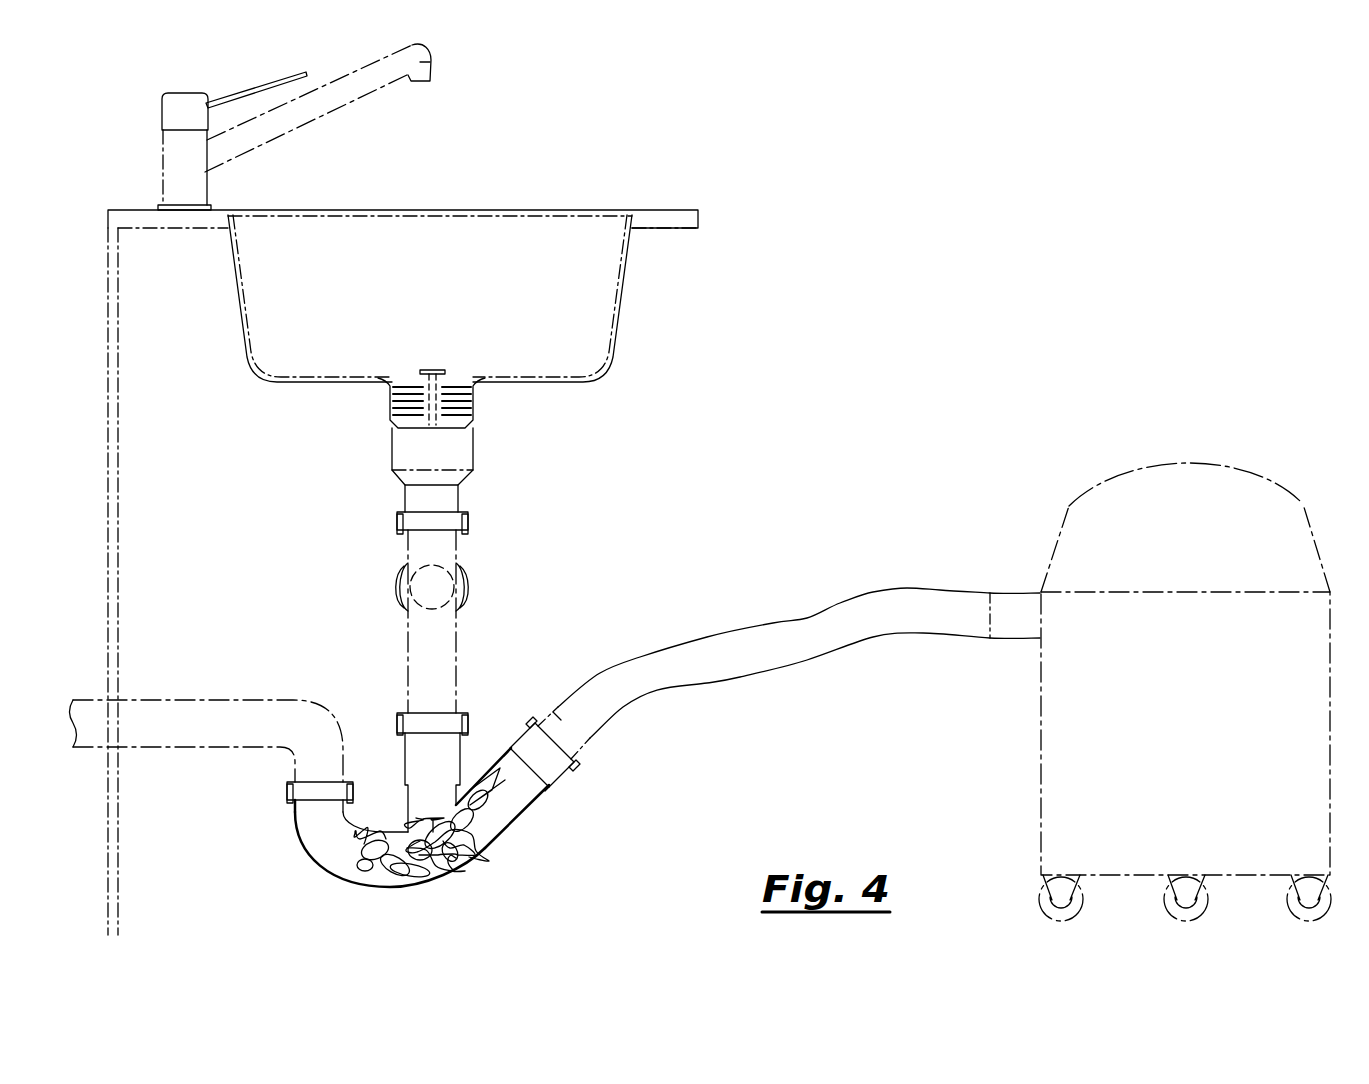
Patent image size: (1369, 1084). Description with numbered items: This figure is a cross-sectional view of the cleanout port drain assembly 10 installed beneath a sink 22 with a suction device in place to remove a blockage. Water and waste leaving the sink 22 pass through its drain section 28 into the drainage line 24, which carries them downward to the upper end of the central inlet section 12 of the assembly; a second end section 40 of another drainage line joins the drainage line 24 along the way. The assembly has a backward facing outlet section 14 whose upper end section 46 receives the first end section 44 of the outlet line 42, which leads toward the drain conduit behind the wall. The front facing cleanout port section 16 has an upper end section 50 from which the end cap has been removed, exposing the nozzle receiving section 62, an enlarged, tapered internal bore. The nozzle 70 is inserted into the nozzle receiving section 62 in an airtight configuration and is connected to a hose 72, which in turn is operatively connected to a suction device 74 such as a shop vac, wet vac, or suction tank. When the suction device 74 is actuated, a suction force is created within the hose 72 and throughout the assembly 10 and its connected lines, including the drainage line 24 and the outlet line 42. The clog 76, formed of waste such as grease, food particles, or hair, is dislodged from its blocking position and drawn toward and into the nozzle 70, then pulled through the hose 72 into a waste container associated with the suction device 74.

The cleanout port drain assembly 10 is at (333, 904).
The central inlet section 12 is at (402, 788).
The outlet section 14 is at (303, 835).
The cleanout port section 16 is at (507, 822).
The sink 22 is at (568, 245).
The drainage line 24 is at (405, 657).
The drain section 28 is at (460, 433).
The second end section 40 is at (468, 580).
The outlet line 42 is at (168, 698).
The first end section 44 is at (287, 783).
The upper end section 46 is at (295, 808).
The upper end section 50 is at (560, 777).
The nozzle receiving section 62 is at (538, 797).
The nozzle 70 is at (556, 716).
The hose 72 is at (805, 643).
The suction device 74 is at (1196, 704).
The clog 76 is at (455, 870).